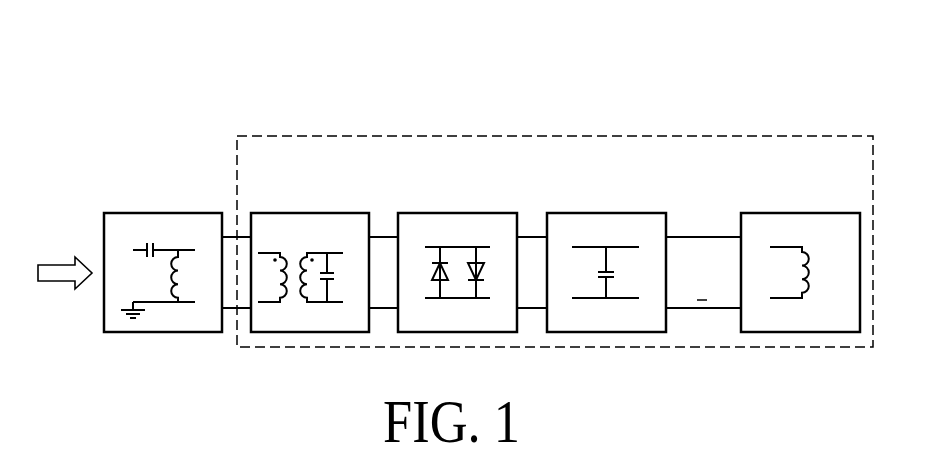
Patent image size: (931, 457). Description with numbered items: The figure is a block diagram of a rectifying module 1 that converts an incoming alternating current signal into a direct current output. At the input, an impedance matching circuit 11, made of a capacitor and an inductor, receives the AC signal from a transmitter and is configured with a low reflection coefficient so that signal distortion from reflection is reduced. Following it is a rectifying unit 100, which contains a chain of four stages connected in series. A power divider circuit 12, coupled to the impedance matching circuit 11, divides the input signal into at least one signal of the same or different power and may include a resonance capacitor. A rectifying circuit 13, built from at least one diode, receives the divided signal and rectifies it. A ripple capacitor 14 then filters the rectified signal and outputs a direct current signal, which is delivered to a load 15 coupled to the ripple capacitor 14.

The rectifying module 1 is at (172, 27).
The impedance matching circuit 11 is at (163, 213).
The rectifying unit 100 is at (548, 135).
The power divider circuit 12 is at (311, 213).
The rectifying circuit 13 is at (459, 213).
The ripple capacitor 14 is at (607, 213).
The load 15 is at (801, 213).